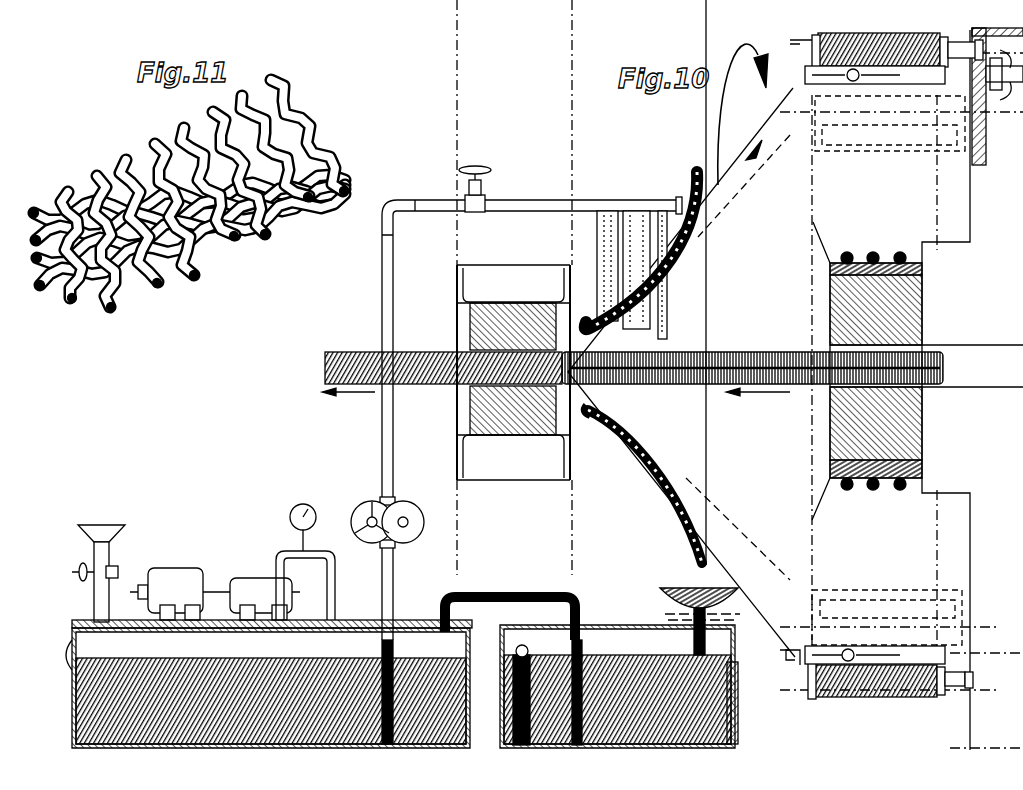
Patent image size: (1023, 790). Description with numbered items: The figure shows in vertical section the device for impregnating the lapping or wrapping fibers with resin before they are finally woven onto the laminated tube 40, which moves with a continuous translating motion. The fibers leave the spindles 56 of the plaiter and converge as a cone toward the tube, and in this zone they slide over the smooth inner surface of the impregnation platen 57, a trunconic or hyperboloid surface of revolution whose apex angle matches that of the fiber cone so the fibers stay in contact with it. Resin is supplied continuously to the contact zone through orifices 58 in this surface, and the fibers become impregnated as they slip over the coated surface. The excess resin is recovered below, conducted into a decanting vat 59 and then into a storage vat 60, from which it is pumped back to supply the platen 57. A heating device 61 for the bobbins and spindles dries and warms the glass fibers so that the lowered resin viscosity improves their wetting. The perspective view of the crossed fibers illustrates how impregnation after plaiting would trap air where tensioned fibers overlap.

The laminated tube 40 is at (741, 354).
The spindles 56 is at (816, 50).
The impregnation platen 57 is at (622, 440).
The orifices 58 is at (620, 236).
The decanting vat 59 is at (738, 697).
The storage vat 60 is at (337, 665).
The heating device 61 is at (903, 433).